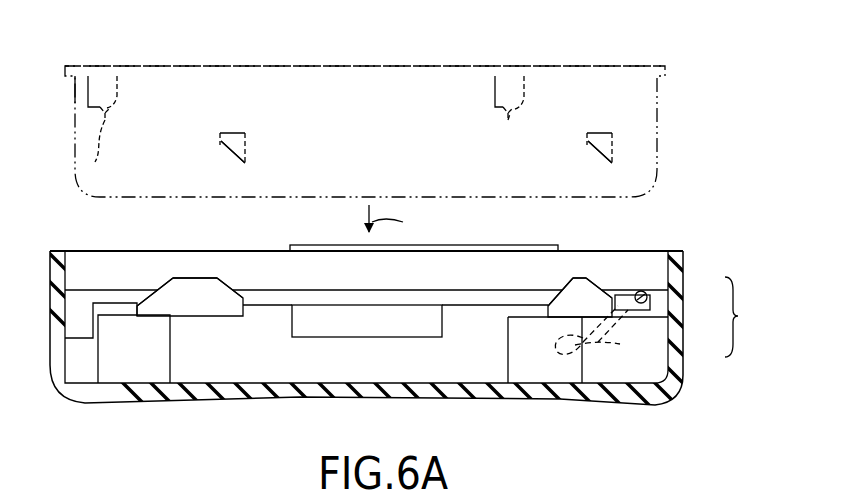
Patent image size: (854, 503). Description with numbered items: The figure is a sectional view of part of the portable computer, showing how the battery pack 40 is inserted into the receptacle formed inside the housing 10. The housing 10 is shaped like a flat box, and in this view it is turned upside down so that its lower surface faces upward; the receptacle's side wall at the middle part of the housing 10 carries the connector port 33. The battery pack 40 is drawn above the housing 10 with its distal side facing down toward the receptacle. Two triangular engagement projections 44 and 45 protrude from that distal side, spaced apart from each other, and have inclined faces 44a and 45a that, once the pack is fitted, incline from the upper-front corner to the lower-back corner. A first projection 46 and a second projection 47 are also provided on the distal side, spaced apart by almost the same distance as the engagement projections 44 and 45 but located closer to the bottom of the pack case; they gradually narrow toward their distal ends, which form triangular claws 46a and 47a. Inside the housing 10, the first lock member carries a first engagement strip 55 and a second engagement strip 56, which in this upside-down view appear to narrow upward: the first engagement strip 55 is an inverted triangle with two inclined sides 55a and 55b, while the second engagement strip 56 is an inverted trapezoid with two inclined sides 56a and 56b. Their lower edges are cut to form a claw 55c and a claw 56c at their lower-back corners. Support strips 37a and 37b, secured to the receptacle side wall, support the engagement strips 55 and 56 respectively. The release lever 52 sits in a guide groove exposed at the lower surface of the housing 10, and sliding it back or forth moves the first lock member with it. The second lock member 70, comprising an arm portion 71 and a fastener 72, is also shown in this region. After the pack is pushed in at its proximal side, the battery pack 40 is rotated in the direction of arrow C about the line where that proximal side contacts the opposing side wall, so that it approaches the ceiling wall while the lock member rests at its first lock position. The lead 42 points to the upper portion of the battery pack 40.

The housing 10 is at (660, 393).
The connector port 33 is at (350, 338).
The support strip 37a is at (528, 375).
The support strip 37b is at (144, 377).
The battery pack 40 is at (587, 68).
The cover plate 42 is at (478, 66).
The first engagement projection 44 is at (614, 140).
The inclined face 44a is at (590, 150).
The second engagement projection 45 is at (248, 138).
The inclined face 45a is at (229, 151).
The first projection 46 is at (528, 96).
The triangular claw 46a is at (497, 112).
The second projection 47 is at (118, 97).
The triangular claw 47a is at (107, 156).
The release lever 52 is at (457, 246).
The first engagement strip 55 is at (568, 307).
The inclined side 55a is at (602, 292).
The inclined side 55b is at (562, 283).
The claw 55c is at (580, 278).
The second engagement strip 56 is at (222, 308).
The inclined side 56a is at (243, 295).
The inclined side 56b is at (155, 282).
The claw 56c is at (174, 277).
The second lock member 70 is at (741, 317).
The arm portion 71 is at (620, 344).
The fastener 72 is at (650, 297).
The arrow C is at (395, 220).